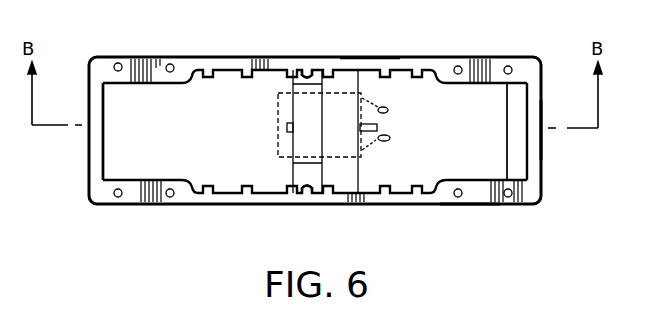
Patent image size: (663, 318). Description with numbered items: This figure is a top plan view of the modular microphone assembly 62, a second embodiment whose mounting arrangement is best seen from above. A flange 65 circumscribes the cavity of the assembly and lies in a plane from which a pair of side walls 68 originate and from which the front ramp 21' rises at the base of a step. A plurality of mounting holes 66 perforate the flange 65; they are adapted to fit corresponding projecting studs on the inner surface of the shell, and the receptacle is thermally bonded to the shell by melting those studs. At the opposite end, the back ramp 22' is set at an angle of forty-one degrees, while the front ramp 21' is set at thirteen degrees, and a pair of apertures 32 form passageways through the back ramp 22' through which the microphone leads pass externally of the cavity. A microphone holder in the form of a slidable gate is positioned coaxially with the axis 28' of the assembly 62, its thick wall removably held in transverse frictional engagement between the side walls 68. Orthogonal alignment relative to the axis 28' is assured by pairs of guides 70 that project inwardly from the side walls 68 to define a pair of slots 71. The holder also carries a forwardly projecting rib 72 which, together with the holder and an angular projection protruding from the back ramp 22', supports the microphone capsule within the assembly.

The front ramp 21' is at (149, 97).
The back ramp 22' is at (467, 97).
The axis 28' is at (568, 134).
The apertures 32 is at (390, 139).
The modular microphone assembly 62 is at (645, 133).
The flange 65 is at (472, 198).
The mounting holes 66 is at (174, 196).
The side walls 68 is at (367, 62).
The guides 70 is at (342, 67).
The slots 71 is at (302, 68).
The forwardly projecting rib 72 is at (287, 125).